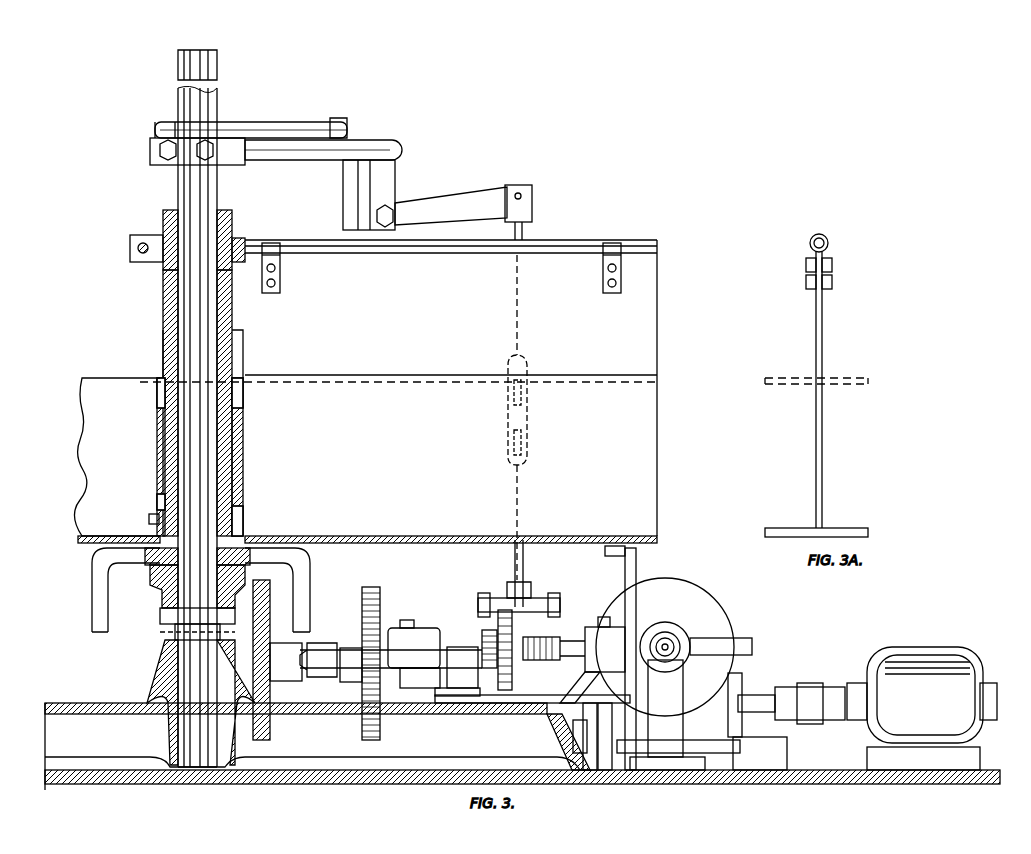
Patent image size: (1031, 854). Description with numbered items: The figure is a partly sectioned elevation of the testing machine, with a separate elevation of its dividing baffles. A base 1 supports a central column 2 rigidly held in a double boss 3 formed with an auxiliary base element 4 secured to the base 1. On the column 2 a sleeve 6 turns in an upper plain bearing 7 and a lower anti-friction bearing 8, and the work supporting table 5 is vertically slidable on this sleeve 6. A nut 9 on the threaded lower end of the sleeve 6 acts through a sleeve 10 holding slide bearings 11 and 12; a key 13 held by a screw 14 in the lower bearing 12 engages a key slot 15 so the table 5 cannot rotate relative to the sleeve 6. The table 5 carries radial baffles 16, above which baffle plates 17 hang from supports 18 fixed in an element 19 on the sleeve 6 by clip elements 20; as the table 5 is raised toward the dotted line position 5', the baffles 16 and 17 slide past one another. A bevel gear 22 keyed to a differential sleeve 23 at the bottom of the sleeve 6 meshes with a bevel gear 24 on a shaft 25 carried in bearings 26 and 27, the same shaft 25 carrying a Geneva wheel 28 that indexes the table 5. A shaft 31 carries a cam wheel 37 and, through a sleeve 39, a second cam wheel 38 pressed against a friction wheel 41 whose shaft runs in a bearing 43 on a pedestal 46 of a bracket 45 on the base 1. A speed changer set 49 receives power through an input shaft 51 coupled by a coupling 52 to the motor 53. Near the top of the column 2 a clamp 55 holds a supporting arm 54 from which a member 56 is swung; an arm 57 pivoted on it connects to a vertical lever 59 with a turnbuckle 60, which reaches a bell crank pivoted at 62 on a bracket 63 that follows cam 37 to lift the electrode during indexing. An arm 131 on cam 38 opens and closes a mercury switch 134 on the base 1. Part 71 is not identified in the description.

In FIG. 3, the base 1 is at (985, 776).
In FIG. 3, the central column 2 is at (200, 775).
In FIG. 3, the double boss 3 is at (168, 668).
In FIG. 3, the auxiliary base element 4 is at (310, 705).
In FIG. 3, the work supporting table 5 is at (384, 531).
In FIG. 3A, the work supporting table 5 is at (828, 530).
In FIG. 3A, the dotted line position of table 5' is at (830, 373).
In FIG. 3, the sleeve 6 is at (236, 313).
In FIG. 3, the bearing 7 is at (228, 217).
In FIG. 3, the bearing 8 is at (160, 612).
In FIG. 3, the nut 9 is at (301, 563).
In FIG. 3, the sleeve 10 is at (246, 447).
In FIG. 3, the slide bearing 11 is at (243, 397).
In FIG. 3, the slide bearing 12 is at (238, 525).
In FIG. 3, the key 13 is at (158, 505).
In FIG. 3, the screw 14 is at (149, 520).
In FIG. 3, the key slot 15 is at (168, 375).
In FIG. 3, the baffle 16 is at (645, 460).
In FIG. 3A, the baffle 16 is at (823, 497).
In FIG. 3, the baffle plate 17 is at (645, 322).
In FIG. 3A, the baffle plate 17 is at (823, 345).
In FIG. 3, the support 18 is at (660, 252).
In FIG. 3A, the support 18 is at (822, 235).
In FIG. 3, the element 19 is at (241, 240).
In FIG. 3, the clip element 20 is at (273, 250).
In FIG. 3A, the clip element 20 is at (832, 262).
In FIG. 3, the bevel gear 22 is at (150, 590).
In FIG. 3, the differential sleeve 23 is at (146, 572).
In FIG. 3, the bevel gear 24 is at (262, 738).
In FIG. 3, the shaft 25 is at (405, 672).
In FIG. 3, the bearing 26 is at (310, 645).
In FIG. 3, the bearing 27 is at (458, 650).
In FIG. 3, the Geneva wheel 28 is at (371, 590).
In FIG. 3, the shaft 31 is at (556, 640).
In FIG. 3, the cam wheel 37 is at (512, 600).
In FIG. 3, the cam wheel 38 is at (636, 578).
In FIG. 3, the sleeve 39 is at (590, 628).
In FIG. 3, the friction wheel 41 is at (690, 645).
In FIG. 3, the bearing 43 is at (700, 656).
In FIG. 3, the supporting plate or bracket 45 is at (690, 772).
In FIG. 3, the pedestal 46 is at (665, 775).
In FIG. 3, the speed changer set 49 is at (700, 603).
In FIG. 3, the input shaft 51 is at (752, 697).
In FIG. 3, the coupling 52 is at (808, 688).
In FIG. 3, the motor 53 is at (925, 652).
In FIG. 3, the supporting arm 54 is at (385, 142).
In FIG. 3, the clamp 55 is at (150, 160).
In FIG. 3, the supporting member 56 is at (393, 185).
In FIG. 3, the arm 57 is at (455, 208).
In FIG. 3, the vertical lever 59 is at (522, 235).
In FIG. 3, the turnbuckle 60 is at (523, 368).
In FIG. 3, the pivot 62 is at (549, 600).
In FIG. 3, the bracket 63 is at (485, 605).
In FIG. 3, the pipe 71 is at (289, 128).
In FIG. 3, the arm 131 is at (605, 552).
In FIG. 3, the mercury switch 134 is at (573, 745).